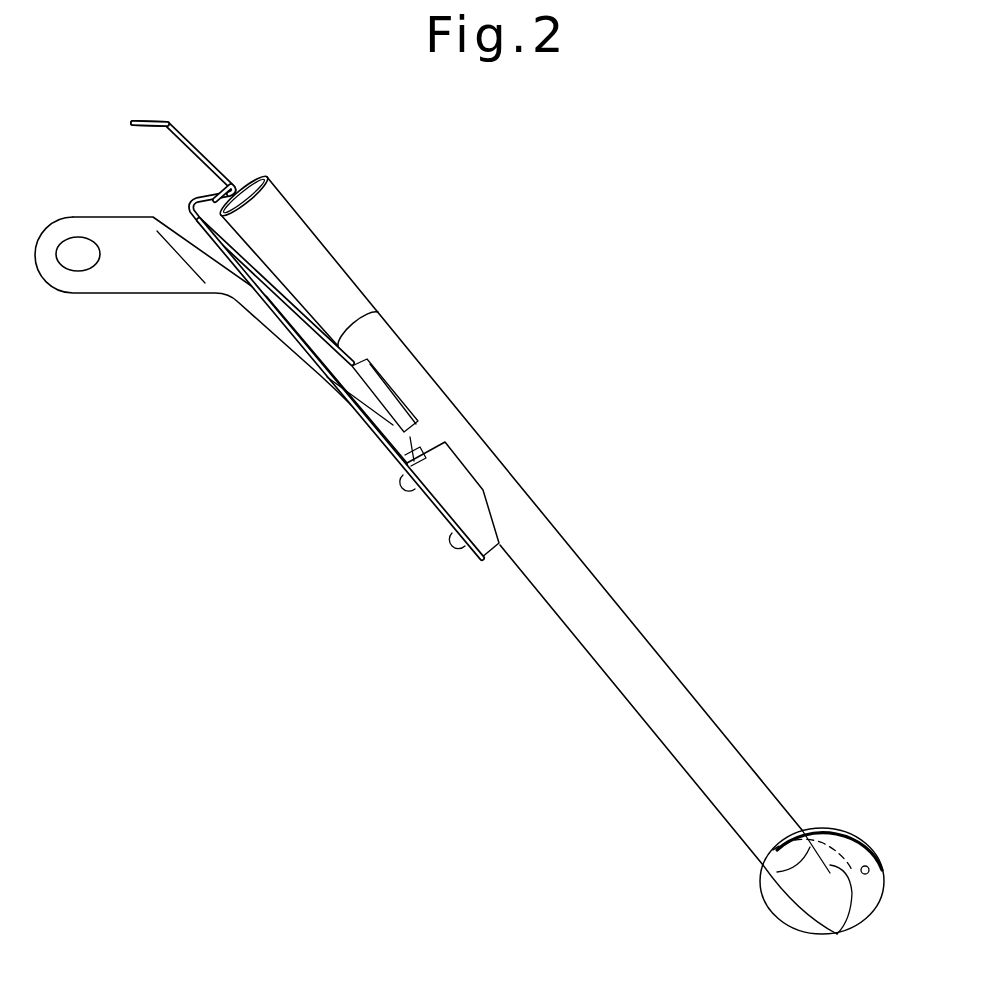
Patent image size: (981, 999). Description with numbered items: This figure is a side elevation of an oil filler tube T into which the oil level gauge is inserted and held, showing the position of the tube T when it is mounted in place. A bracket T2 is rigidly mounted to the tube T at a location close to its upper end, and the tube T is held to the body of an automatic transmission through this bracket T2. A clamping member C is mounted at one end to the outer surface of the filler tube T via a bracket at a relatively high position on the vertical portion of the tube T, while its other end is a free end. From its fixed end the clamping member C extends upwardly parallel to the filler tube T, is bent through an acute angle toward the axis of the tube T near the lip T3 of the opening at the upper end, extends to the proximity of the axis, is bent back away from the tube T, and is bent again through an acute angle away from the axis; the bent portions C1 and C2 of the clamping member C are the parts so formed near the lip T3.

The filler tube T is at (605, 607).
The bracket T2 is at (147, 284).
The lip T3 is at (268, 176).
The clamping member C is at (192, 134).
The hook portion of clip C1 is at (237, 185).
The arm portion of clip C2 is at (167, 120).